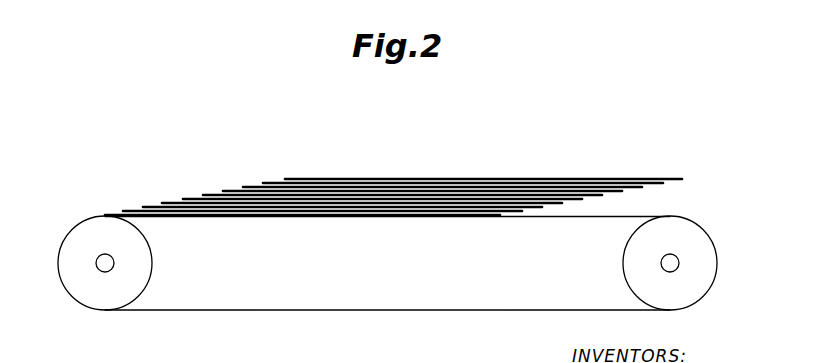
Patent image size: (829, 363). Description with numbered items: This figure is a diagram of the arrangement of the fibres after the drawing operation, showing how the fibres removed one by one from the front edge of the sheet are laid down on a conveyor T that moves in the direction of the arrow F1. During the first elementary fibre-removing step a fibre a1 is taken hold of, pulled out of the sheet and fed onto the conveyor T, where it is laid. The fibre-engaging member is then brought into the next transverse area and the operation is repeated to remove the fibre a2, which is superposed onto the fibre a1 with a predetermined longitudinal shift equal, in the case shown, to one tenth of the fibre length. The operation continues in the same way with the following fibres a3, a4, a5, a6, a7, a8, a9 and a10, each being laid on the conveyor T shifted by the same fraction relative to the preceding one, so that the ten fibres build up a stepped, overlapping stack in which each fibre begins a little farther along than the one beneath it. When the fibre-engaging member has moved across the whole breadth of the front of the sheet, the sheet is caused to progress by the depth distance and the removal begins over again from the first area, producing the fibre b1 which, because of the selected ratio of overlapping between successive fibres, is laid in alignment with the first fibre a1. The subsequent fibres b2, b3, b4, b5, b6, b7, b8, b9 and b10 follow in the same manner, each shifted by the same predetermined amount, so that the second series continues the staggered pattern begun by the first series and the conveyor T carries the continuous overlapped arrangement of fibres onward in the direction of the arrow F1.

The fibre a1 is at (118, 214).
The fibre a2 is at (132, 210).
The fibre a3 is at (153, 206).
The fibre a4 is at (172, 202).
The fibre a5 is at (192, 198).
The fibre a6 is at (213, 194).
The fibre a7 is at (233, 190).
The fibre a8 is at (253, 186).
The fibre a9 is at (273, 182).
The fibre a10 is at (294, 178).
The fibre b1 is at (360, 217).
The fibre b2 is at (378, 213).
The fibre b3 is at (395, 208).
The fibre b4 is at (410, 200).
The fibre b5 is at (430, 198).
The fibre b6 is at (452, 195).
The fibre b7 is at (473, 191).
The fibre b8 is at (493, 188).
The fibre b9 is at (513, 186).
The fibre b10 is at (530, 184).
The arrow F1 is at (360, 228).
The conveyor T is at (648, 217).